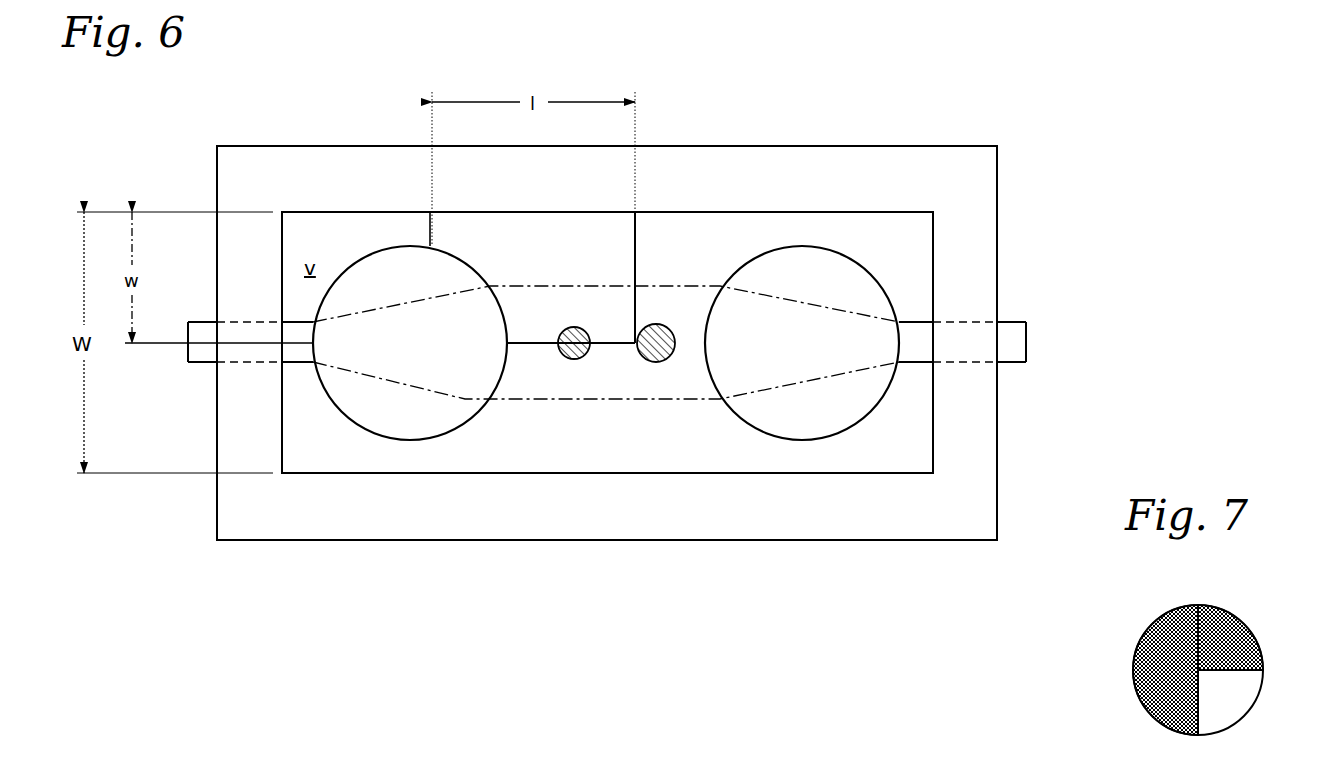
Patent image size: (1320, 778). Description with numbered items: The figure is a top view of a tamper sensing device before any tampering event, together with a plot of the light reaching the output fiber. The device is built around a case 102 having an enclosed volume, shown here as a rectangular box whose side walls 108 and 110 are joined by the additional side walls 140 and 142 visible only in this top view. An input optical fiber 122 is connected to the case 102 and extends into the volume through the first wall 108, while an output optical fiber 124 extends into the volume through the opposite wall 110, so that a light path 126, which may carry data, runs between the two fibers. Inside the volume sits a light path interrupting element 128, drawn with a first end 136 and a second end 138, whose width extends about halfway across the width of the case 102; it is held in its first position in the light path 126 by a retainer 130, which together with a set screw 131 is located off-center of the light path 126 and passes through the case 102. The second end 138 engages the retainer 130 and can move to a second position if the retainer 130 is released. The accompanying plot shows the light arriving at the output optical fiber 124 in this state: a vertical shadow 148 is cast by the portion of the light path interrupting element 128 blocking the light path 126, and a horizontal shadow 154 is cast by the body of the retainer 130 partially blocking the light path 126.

In FIG. 6, the case 102 is at (997, 212).
In FIG. 6, the side wall 108 is at (997, 295).
In FIG. 6, the side wall 110 is at (216, 195).
In FIG. 6, the input optical fiber 122 is at (1015, 364).
In FIG. 6, the output optical fiber 124 is at (205, 362).
In FIG. 6, the light path 126 is at (685, 400).
In FIG. 6, the light path interrupting element 128 is at (594, 230).
In FIG. 6, the retainer 130 is at (664, 324).
In FIG. 6, the set screw 131 is at (562, 328).
In FIG. 6, the first end 136 is at (430, 243).
In FIG. 6, the second end 138 is at (637, 233).
In FIG. 6, the side wall 140 is at (475, 540).
In FIG. 6, the side wall 142 is at (853, 146).
In FIG. 7, the vertical shadow 148 is at (1140, 700).
In FIG. 7, the horizontal shadow 154 is at (1218, 606).